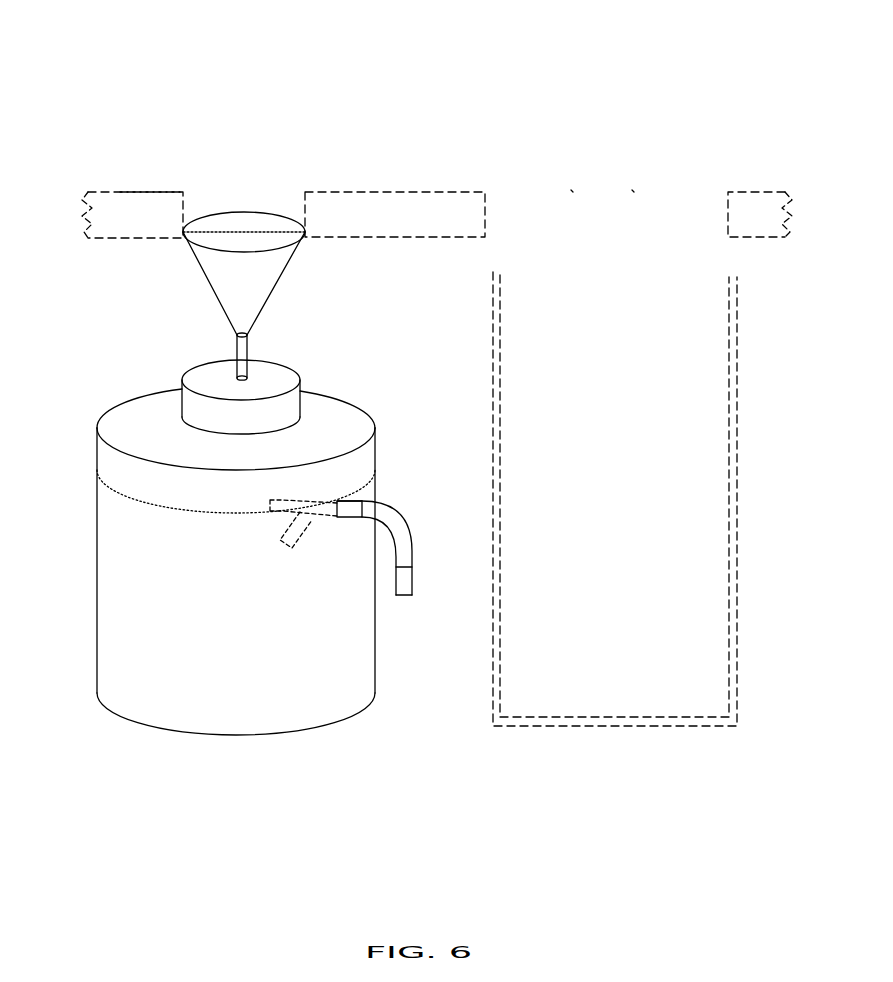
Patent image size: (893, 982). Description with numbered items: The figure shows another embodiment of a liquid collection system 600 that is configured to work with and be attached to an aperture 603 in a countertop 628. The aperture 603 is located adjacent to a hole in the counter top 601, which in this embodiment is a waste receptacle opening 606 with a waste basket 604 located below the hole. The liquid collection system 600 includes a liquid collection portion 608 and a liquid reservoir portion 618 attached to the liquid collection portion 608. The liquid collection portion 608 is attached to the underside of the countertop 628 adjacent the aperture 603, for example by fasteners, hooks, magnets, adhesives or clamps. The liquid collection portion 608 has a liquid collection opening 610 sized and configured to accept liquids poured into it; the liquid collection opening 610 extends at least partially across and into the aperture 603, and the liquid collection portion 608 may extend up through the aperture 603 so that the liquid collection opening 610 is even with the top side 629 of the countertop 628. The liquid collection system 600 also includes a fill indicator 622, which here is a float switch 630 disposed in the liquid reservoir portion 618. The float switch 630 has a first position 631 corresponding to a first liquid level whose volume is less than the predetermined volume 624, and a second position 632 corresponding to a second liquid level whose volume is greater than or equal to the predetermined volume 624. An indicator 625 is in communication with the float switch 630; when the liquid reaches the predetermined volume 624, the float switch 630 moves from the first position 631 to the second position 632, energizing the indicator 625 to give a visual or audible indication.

The liquid collection system 600 is at (180, 41).
The hole in the counter top 601 is at (645, 166).
The aperture 603 is at (242, 190).
The waste basket 604 is at (665, 727).
The waste receptacle opening 606 is at (572, 192).
The liquid collection portion 608 is at (205, 275).
The liquid collection opening 610 is at (275, 235).
The liquid reservoir portion 618 is at (98, 553).
The fill indicator 622 is at (352, 517).
The predetermined volume 624 is at (128, 498).
The indicator 625 is at (404, 532).
The countertop 628 is at (140, 200).
The top side 629 is at (145, 192).
The float switch 630 is at (352, 501).
The first position 631 is at (283, 531).
The second position 632 is at (285, 501).